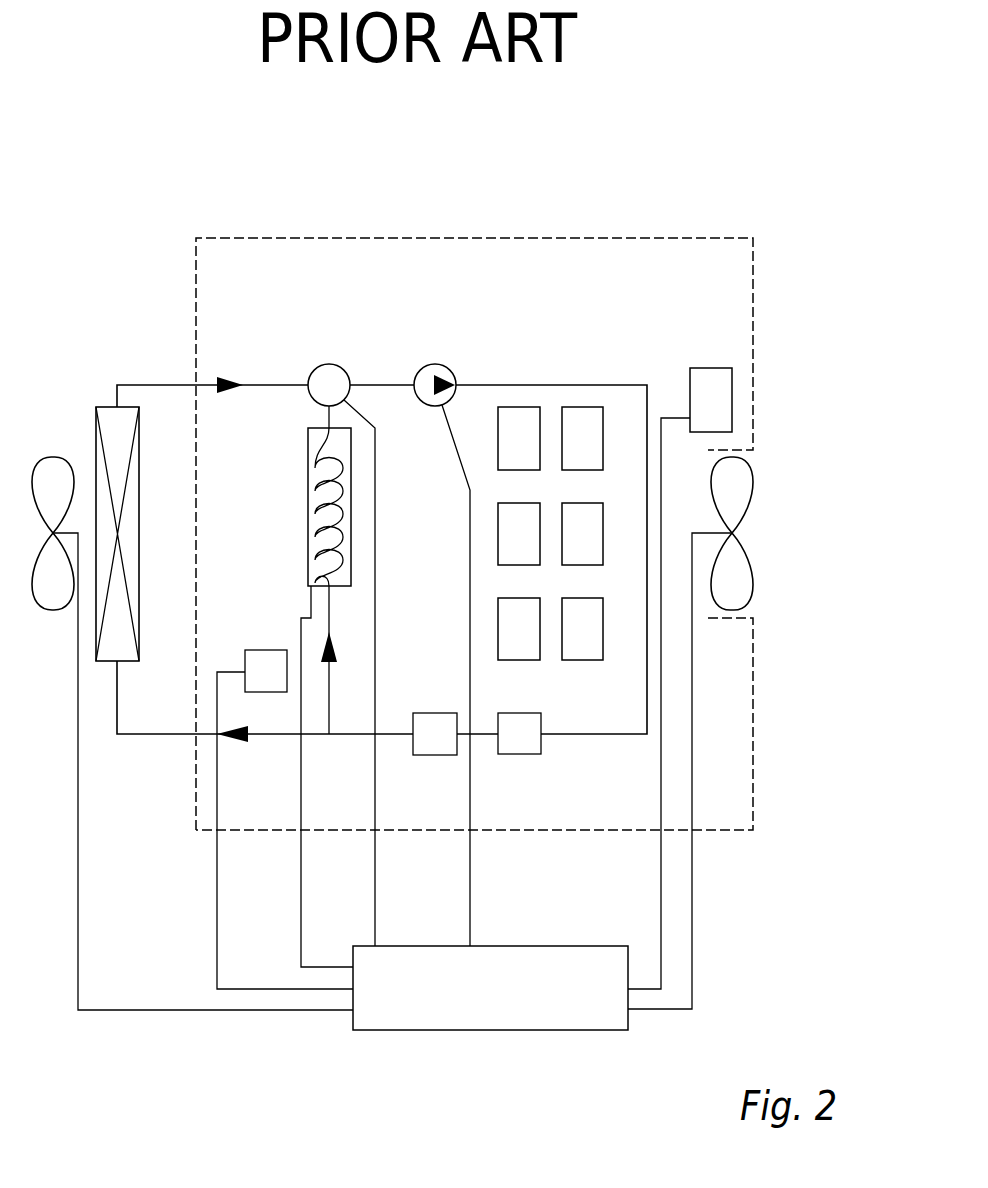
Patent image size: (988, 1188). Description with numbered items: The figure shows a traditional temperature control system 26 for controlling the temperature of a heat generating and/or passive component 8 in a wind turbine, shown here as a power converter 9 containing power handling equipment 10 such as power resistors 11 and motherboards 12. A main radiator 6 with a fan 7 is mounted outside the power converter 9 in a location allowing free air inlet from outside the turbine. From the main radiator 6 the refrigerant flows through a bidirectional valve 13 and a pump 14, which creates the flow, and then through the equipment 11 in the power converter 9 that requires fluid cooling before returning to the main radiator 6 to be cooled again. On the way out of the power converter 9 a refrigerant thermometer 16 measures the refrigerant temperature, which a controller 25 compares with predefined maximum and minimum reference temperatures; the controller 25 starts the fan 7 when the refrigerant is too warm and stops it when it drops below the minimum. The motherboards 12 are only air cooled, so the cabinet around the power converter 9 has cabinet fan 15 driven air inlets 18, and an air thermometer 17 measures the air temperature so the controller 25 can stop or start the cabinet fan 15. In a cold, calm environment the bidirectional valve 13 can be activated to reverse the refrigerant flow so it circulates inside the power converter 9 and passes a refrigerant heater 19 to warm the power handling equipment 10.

The main radiator 6 is at (113, 425).
The fan 7 is at (57, 478).
The heat generating and/or passive component 8 is at (624, 278).
The power converter 9 is at (513, 288).
The power handling equipment 10 is at (430, 735).
The power resistors 11 is at (513, 735).
The motherboards 12 is at (522, 635).
The bidirectional valve 13 is at (328, 380).
The pump 14 is at (425, 378).
The cabinet fan 15 is at (730, 493).
The refrigerant thermometer 16 is at (272, 680).
The air thermometer 17 is at (707, 393).
The air inlets 18 is at (743, 616).
The refrigerant heater 19 is at (312, 458).
The controller 25 is at (438, 1010).
The temperature control system 26 is at (175, 188).